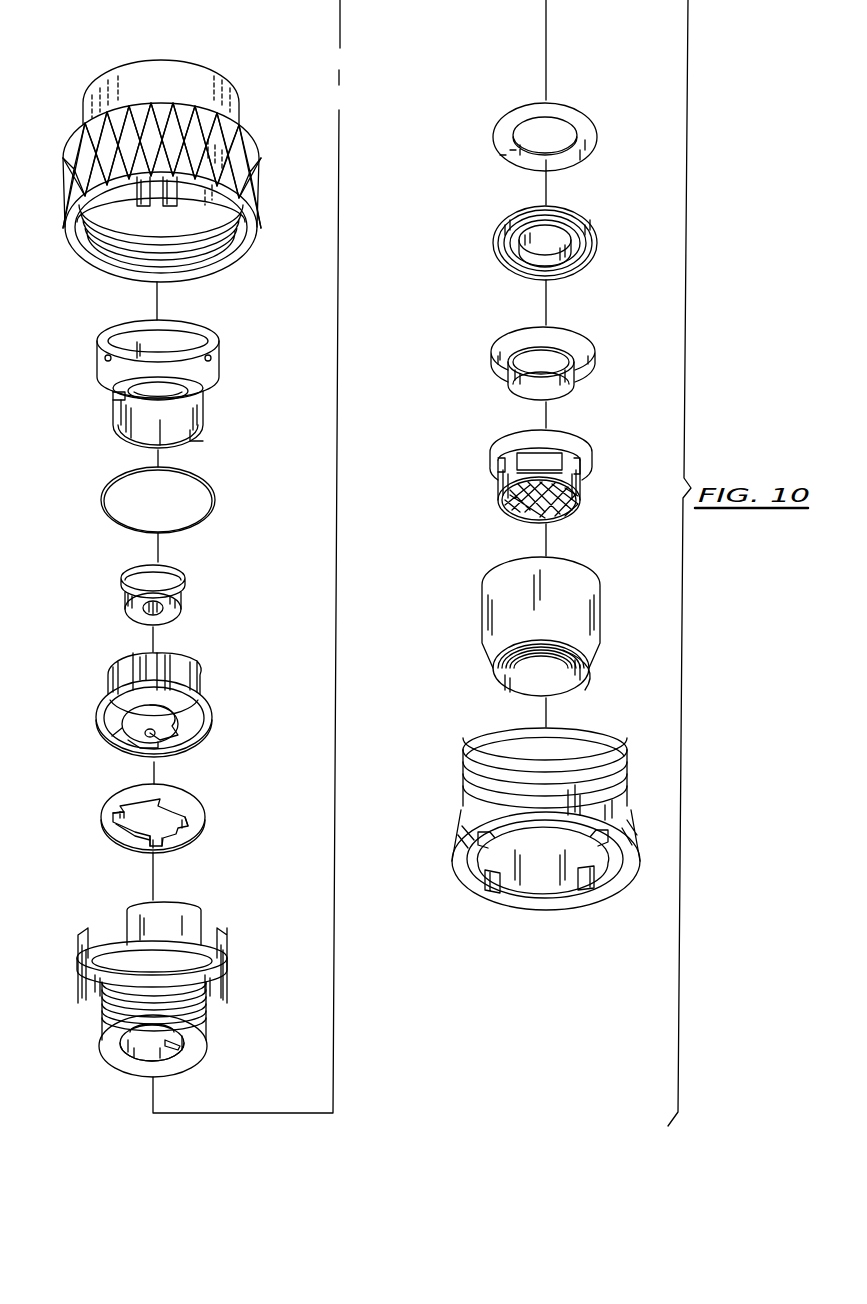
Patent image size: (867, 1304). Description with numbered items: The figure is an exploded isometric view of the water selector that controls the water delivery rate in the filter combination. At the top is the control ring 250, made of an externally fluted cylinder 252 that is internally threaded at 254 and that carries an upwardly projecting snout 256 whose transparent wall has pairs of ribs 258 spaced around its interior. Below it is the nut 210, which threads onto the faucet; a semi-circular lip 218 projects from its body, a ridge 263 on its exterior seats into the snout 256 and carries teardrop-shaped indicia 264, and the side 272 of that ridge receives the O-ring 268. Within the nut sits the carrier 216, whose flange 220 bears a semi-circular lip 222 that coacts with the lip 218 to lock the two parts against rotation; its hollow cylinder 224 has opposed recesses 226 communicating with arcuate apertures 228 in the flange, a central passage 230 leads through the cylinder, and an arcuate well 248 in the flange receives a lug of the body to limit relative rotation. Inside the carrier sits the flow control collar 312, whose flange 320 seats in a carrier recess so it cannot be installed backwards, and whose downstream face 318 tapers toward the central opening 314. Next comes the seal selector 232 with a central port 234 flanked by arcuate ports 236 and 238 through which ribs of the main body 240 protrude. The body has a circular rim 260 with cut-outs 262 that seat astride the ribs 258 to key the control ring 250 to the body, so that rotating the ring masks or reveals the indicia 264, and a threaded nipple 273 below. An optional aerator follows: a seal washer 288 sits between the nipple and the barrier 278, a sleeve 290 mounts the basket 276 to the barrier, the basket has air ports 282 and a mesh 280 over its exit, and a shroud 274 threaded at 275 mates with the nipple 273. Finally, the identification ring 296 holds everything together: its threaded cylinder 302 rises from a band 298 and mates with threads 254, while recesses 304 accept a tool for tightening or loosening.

The control ring 250 is at (190, 172).
The snout 256 is at (240, 113).
The externally fluted cylinder 252 is at (258, 200).
The internal threads 254 is at (205, 255).
The ribs 258 is at (161, 208).
The nut 210 is at (162, 384).
The semi-circular lip 218 is at (120, 400).
The side of ridge 272 is at (102, 400).
The ridge 263 is at (97, 375).
The indicia 264 is at (210, 356).
The O-ring 268 is at (212, 496).
The flow control collar 312 is at (165, 601).
The flange 320 is at (121, 582).
The downstream face 318 is at (133, 613).
The central opening 314 is at (160, 614).
The carrier 216 is at (160, 712).
The semi-circular lip 222 is at (212, 712).
The hollow cylinder 224 is at (106, 688).
The recesses 226 is at (178, 662).
The flange 220 is at (200, 737).
The central passage 230 is at (128, 733).
The arcuate apertures 228 is at (186, 700).
The arcuate well 248 is at (175, 745).
The seal selector 232 is at (164, 826).
The arcuate port 236 is at (115, 808).
The arcuate port 238 is at (180, 830).
The central port 234 is at (148, 826).
The main body 240 is at (179, 987).
The cut-outs 262 is at (223, 893).
The circular rim 260 is at (228, 950).
The nipple 273 is at (200, 1062).
The seal washer 288 is at (596, 136).
The barrier 278 is at (597, 243).
The sleeve 290 is at (597, 352).
The basket 276 is at (540, 474).
The ports 282 is at (556, 456).
The mesh 280 is at (568, 521).
The shroud 274 is at (574, 628).
The threads 275 is at (577, 673).
The identification ring 296 is at (523, 830).
The threaded cylinder 302 is at (462, 778).
The band 298 is at (455, 840).
The recesses 304 is at (584, 892).